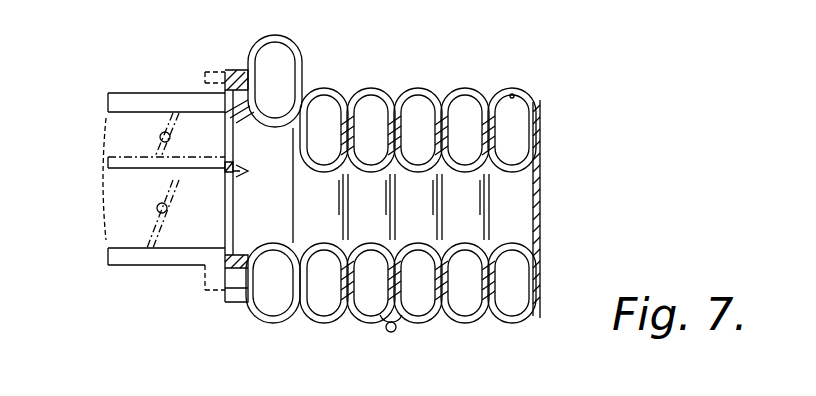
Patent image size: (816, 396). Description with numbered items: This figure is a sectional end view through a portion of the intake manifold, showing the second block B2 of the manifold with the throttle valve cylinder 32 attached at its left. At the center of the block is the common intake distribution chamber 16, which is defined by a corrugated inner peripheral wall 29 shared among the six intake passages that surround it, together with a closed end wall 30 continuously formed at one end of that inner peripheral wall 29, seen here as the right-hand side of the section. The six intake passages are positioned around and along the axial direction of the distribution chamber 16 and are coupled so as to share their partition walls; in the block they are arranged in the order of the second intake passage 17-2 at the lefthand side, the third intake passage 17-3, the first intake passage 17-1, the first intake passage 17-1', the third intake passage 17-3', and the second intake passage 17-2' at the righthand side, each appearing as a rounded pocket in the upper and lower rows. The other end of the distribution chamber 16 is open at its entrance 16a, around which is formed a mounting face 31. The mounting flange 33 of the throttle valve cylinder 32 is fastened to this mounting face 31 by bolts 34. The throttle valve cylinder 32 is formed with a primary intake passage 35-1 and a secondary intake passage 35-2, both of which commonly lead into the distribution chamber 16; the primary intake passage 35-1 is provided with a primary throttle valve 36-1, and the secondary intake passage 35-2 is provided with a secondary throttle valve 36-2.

The second intake passage at the righthand side 17-2' is at (274, 184).
The third intake passage at the righthand side 17-3' is at (327, 206).
The first intake passage at the righthand side 17-1' is at (374, 206).
The first intake passage at the lefthand side 17-1 is at (421, 207).
The third intake passage at the lefthand side 17-3 is at (468, 207).
The second intake passage at the lefthand side 17-2 is at (527, 217).
The second block B2 is at (512, 93).
The intake distribution chamber 16 is at (375, 221).
The entrance 16a is at (254, 176).
The corrugated inner peripheral wall 29 is at (423, 174).
The closed end wall 30 is at (540, 207).
The mounting face 31 is at (225, 103).
The throttle valve cylinder 32 is at (118, 92).
The mounting flange 33 is at (213, 303).
The bolts 34 is at (205, 290).
The primary intake passage 35-1 is at (117, 114).
The secondary intake passage 35-2 is at (127, 244).
The primary throttle valve 36-1 is at (160, 140).
The secondary throttle valve 36-2 is at (157, 208).